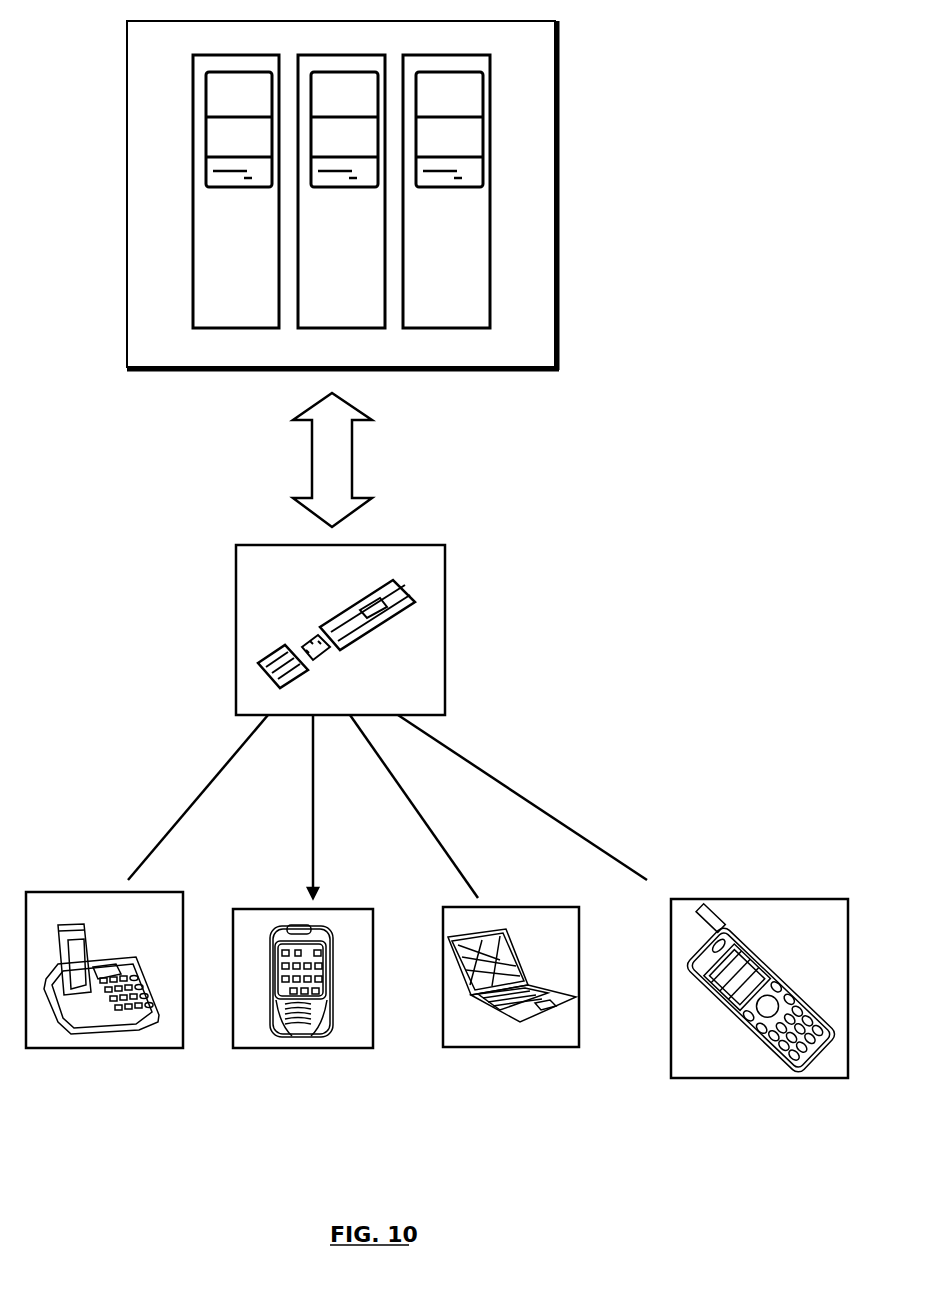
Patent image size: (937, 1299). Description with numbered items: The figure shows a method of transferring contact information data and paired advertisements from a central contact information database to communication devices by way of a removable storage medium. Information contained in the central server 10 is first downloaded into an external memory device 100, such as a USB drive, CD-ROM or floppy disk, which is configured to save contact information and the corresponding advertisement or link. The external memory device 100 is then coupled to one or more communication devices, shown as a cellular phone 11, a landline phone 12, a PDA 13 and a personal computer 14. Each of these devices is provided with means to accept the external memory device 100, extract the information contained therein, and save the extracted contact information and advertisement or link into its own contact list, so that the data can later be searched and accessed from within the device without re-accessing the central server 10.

The central server 10 is at (662, 123).
The external memory device 100 is at (529, 631).
The cellular phone 11 is at (755, 1015).
The landline phone 12 is at (104, 1006).
The PDA 13 is at (511, 1019).
The personal computer 14 is at (303, 1014).